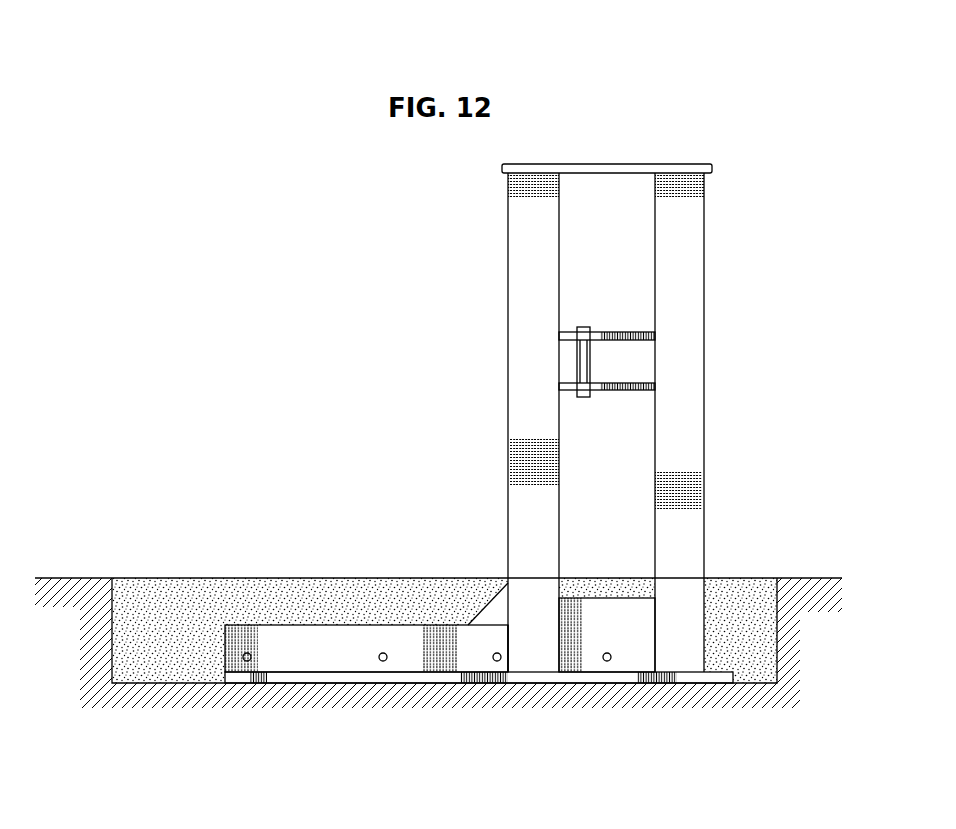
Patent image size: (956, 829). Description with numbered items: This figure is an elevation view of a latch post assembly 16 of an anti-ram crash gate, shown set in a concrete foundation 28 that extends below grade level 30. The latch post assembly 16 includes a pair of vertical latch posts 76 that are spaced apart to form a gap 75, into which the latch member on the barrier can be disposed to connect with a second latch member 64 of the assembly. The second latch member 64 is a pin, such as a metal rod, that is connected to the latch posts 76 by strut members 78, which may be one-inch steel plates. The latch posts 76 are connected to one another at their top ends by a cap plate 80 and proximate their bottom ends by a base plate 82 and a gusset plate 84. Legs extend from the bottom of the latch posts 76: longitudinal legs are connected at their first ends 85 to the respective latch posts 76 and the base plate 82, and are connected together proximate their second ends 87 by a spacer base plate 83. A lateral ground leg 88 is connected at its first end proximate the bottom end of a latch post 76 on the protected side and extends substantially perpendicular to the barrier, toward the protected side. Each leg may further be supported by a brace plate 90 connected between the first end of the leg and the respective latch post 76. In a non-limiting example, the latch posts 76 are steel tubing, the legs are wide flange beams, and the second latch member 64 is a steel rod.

The latch post assembly 16 is at (326, 415).
The concrete foundation 28 is at (152, 628).
The grade level 30 is at (75, 578).
The second latch member 64 is at (587, 370).
The gap 75 is at (596, 264).
The latch post 76 is at (690, 222).
The strut member 78 is at (647, 333).
The cap plate 80 is at (622, 163).
The base plate 82 is at (492, 678).
The spacer base plate 83 is at (242, 678).
The gusset plate 84 is at (596, 636).
The first end 85 is at (500, 637).
The second end 87 is at (243, 640).
The lateral ground leg 88 is at (352, 640).
The brace plate 90 is at (492, 607).